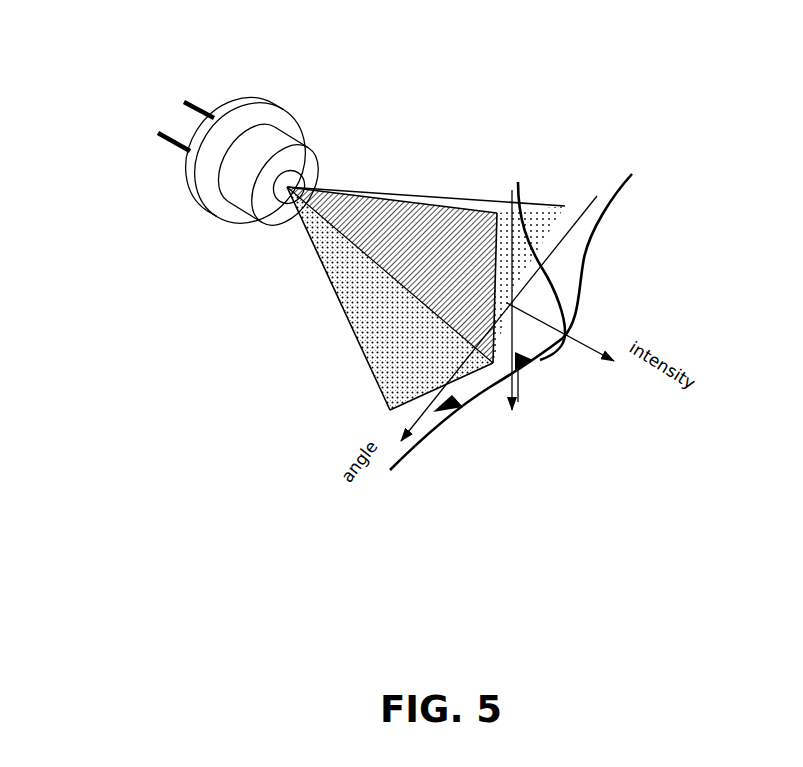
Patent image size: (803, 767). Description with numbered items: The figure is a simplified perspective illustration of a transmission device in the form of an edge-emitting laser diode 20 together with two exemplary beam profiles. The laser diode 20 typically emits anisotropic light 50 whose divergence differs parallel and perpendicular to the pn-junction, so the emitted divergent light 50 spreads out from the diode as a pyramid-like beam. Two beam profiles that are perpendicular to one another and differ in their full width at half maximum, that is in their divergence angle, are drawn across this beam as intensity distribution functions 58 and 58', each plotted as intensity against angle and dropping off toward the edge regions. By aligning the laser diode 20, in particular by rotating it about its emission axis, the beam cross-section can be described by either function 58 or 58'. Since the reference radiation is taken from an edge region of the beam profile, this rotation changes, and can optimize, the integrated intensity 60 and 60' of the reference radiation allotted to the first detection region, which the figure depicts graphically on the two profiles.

The laser diode 20 is at (226, 180).
The divergent light 50 is at (346, 162).
The intensity distribution function 58 is at (556, 322).
The intensity distribution function 58' is at (552, 231).
The integrated intensity 60 is at (446, 479).
The integrated intensity 60' is at (516, 435).